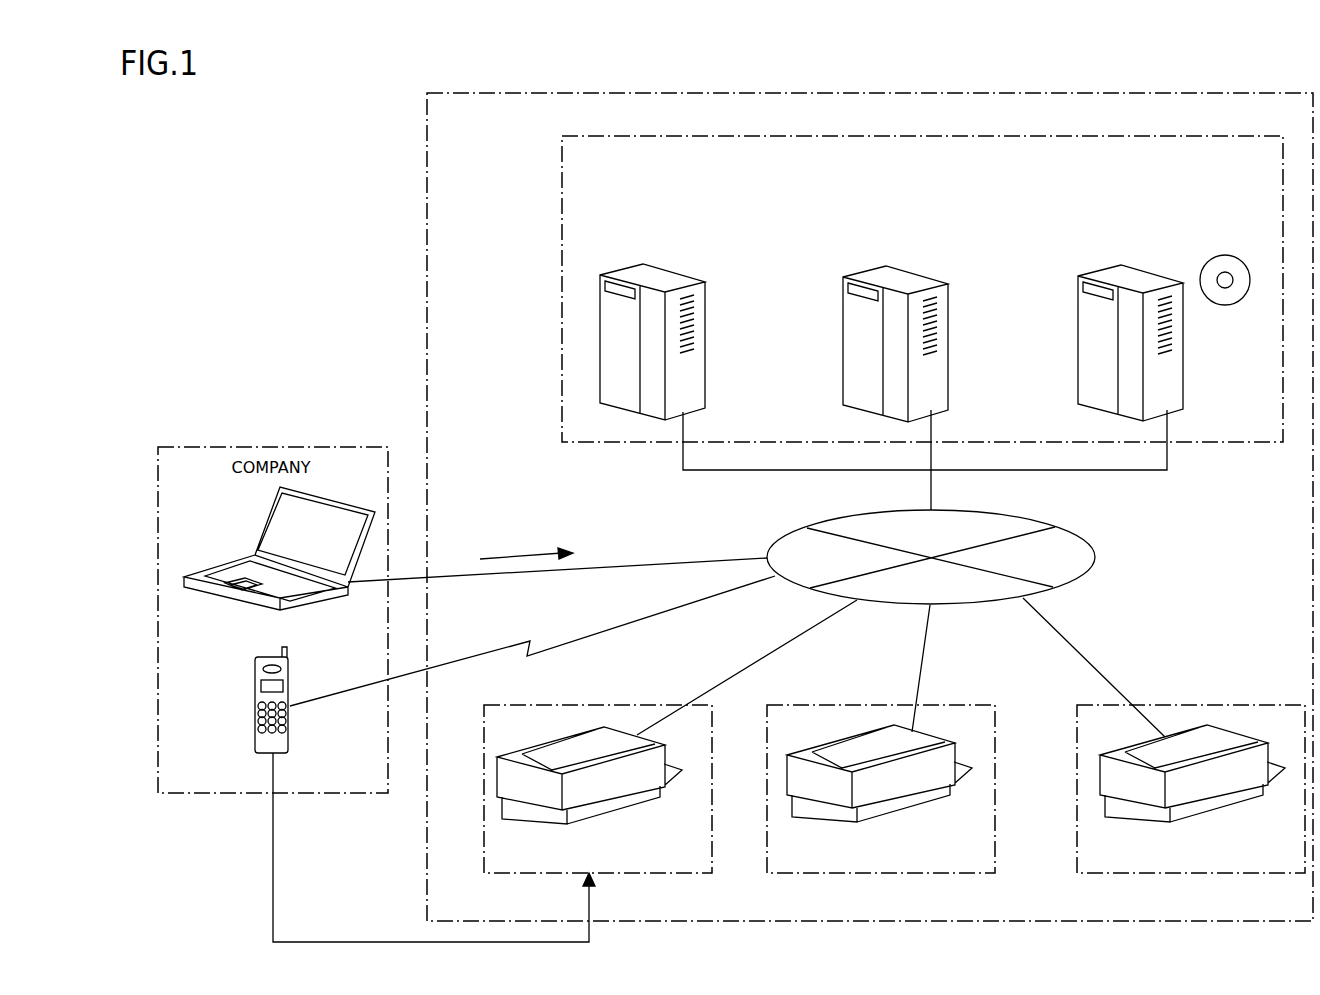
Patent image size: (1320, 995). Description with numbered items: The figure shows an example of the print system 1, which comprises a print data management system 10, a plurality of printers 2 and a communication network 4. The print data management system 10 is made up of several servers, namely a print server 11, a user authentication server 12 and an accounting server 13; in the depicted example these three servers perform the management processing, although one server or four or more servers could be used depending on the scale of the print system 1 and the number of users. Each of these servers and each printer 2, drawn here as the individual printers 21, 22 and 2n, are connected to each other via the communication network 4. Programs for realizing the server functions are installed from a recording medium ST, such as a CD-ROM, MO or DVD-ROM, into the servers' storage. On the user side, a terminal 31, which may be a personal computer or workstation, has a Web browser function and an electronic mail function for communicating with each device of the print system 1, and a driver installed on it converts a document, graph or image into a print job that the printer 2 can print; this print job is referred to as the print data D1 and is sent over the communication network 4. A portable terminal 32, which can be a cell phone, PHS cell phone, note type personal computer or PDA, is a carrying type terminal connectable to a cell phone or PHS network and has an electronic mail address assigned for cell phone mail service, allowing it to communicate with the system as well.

The print system 1 is at (427, 307).
The print data management system 10 is at (562, 365).
The print server 11 is at (1183, 360).
The user authentication server 12 is at (948, 360).
The accounting server 13 is at (705, 360).
The recording medium ST is at (1233, 256).
The communication network 4 is at (1095, 556).
The terminal 31 is at (312, 596).
The portable terminal 32 is at (290, 720).
The printer 2 is at (894, 789).
The printer 21 is at (608, 810).
The printer 22 is at (893, 808).
The printer 2n is at (1205, 807).
The print data D1 is at (505, 557).